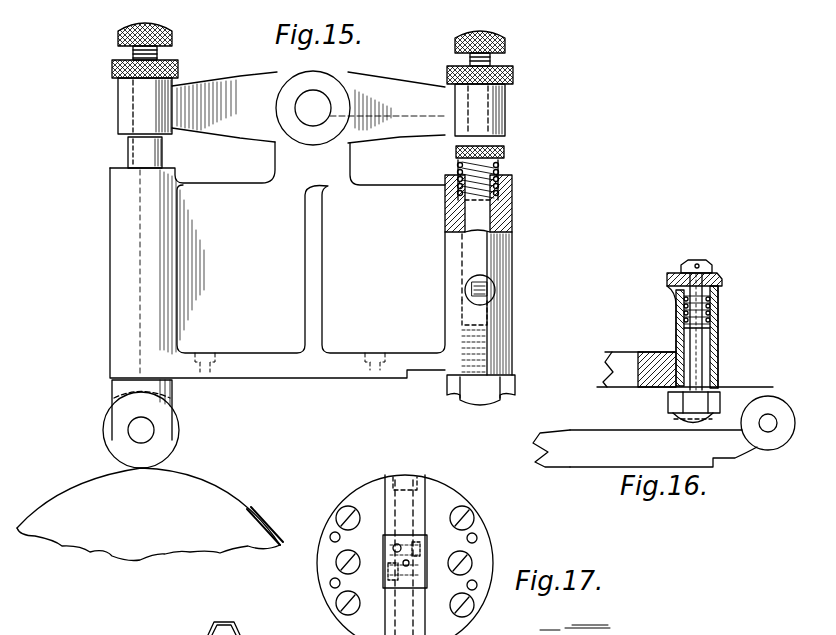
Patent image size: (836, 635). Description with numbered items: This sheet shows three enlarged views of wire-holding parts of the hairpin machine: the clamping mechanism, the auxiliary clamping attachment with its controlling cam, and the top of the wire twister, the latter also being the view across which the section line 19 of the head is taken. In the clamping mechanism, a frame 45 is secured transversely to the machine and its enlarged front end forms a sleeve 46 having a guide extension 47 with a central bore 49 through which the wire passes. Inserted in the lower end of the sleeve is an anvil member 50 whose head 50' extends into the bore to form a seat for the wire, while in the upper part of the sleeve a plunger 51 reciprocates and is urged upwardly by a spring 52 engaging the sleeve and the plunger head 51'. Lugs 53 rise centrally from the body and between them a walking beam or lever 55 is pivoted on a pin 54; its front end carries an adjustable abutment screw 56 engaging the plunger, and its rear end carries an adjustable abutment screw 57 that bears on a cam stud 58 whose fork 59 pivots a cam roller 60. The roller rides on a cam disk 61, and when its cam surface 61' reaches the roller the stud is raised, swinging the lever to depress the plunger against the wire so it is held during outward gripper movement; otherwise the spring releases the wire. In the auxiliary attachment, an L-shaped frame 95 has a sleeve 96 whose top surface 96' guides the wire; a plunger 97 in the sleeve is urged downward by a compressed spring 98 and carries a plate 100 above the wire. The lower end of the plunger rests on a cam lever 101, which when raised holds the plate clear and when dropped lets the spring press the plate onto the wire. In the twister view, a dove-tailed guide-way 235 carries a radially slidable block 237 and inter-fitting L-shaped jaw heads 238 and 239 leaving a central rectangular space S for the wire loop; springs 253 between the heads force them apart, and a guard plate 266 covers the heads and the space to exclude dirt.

In FIG. 17, the lens carrier / carriage 19 is at (405, 475).
In FIG. 15, the frame 45 is at (277, 260).
In FIG. 15, the sleeve 46 is at (512, 272).
In FIG. 15, the guide extension 47 is at (465, 290).
In FIG. 15, the central bore 49 is at (488, 292).
In FIG. 15, the anvil member 50 is at (497, 367).
In FIG. 15, the anvil head 50' is at (504, 313).
In FIG. 15, the plunger 51 is at (493, 203).
In FIG. 15, the plunger head 51' is at (498, 145).
In FIG. 15, the spring 52 is at (500, 168).
In FIG. 15, the lug 53 is at (348, 80).
In FIG. 15, the pin 54 is at (331, 115).
In FIG. 15, the walking beam or lever 55 is at (400, 86).
In FIG. 15, the adjustable abutment screw 56 is at (490, 62).
In FIG. 15, the adjustable abutment screw 57 is at (158, 56).
In FIG. 15, the cam stud 58 is at (163, 155).
In FIG. 15, the fork 59 is at (170, 400).
In FIG. 15, the cam roller 60 is at (181, 440).
In FIG. 15, the cam disk 61 is at (148, 514).
In FIG. 15, the cam surface 61' is at (271, 518).
In FIG. 16, the L-shaped frame 95 is at (648, 388).
In FIG. 16, the sleeve 96 is at (709, 337).
In FIG. 16, the top surface of sleeve 96' is at (645, 301).
In FIG. 16, the plunger 97 is at (684, 306).
In FIG. 16, the compressed spring 98 is at (712, 308).
In FIG. 16, the plate 100 is at (712, 274).
In FIG. 16, the cam lever 101 is at (594, 458).
In FIG. 17, the dove-tailed guide-way 235 is at (278, 623).
In FIG. 17, the block 237 is at (405, 482).
In FIG. 17, the L-shaped jaw head 238 is at (420, 582).
In FIG. 17, the L-shaped jaw head 239 is at (385, 548).
In FIG. 17, the springs 253 is at (422, 545).
In FIG. 17, the guard plate 266 is at (228, 621).
In FIG. 17, the vertical rectangular space S is at (418, 566).